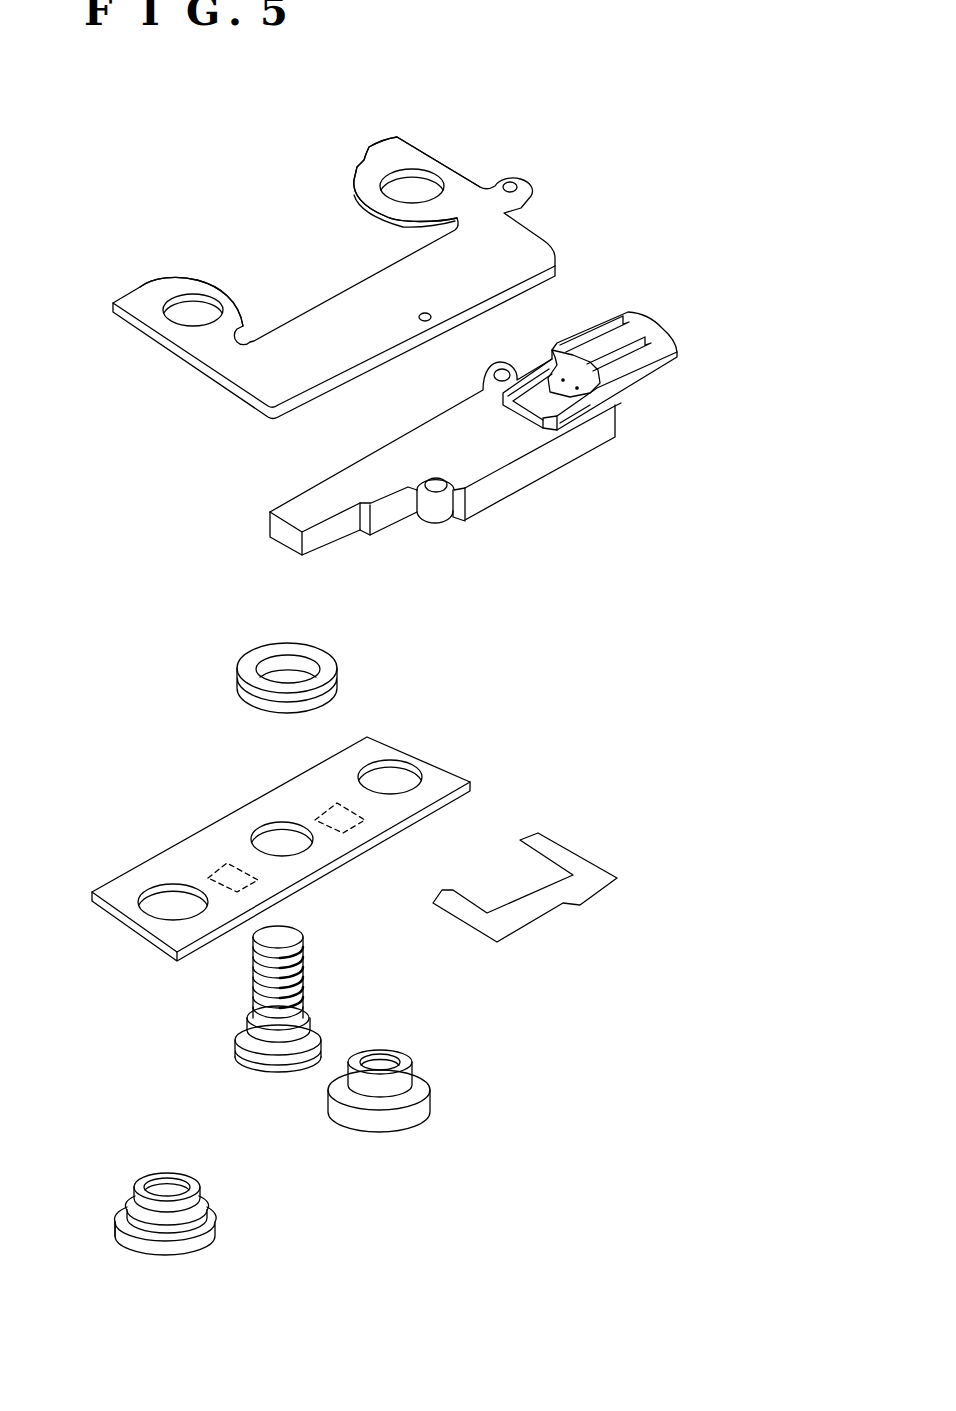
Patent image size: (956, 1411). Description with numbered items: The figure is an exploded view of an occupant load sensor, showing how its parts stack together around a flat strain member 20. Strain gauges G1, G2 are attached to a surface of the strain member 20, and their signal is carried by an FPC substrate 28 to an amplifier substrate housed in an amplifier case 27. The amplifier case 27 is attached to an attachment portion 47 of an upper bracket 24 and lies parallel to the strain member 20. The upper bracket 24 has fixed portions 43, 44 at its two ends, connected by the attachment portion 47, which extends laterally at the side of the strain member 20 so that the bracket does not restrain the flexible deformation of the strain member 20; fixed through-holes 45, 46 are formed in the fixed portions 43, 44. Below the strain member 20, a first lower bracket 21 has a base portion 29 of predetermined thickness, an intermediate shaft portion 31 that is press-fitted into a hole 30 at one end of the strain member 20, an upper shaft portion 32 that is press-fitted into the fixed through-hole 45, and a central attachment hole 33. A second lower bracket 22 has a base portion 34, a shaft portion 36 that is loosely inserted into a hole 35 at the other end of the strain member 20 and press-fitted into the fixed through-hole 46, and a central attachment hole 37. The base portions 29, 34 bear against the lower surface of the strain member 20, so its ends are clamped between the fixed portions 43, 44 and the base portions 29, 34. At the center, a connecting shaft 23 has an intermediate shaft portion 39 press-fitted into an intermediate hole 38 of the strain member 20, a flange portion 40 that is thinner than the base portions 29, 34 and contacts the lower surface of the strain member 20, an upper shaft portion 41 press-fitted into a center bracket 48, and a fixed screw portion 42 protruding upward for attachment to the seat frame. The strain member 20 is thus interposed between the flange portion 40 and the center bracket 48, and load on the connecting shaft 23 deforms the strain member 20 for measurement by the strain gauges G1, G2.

The strain member 20 is at (457, 783).
The first lower bracket 21 is at (160, 1215).
The second lower bracket 22 is at (411, 1083).
The connecting shaft 23 is at (232, 1030).
The upper bracket 24 is at (526, 247).
The amplifier case 27 is at (483, 408).
The FPC substrate 28 is at (578, 858).
The base portion 29 is at (123, 1234).
The hole 30 is at (168, 892).
The intermediate shaft portion 31 is at (190, 1213).
The upper shaft portion 32 is at (153, 1210).
The attachment hole 33 is at (158, 1180).
The base portion 34 is at (377, 1122).
The hole 35 is at (397, 773).
The shaft portion 36 is at (404, 1082).
The attachment hole 37 is at (378, 1056).
The intermediate hole 38 is at (295, 848).
The intermediate shaft portion 39 is at (263, 1052).
The flange portion 40 is at (283, 1072).
The upper shaft portion 41 is at (246, 1020).
The fixed screw portion 42 is at (258, 977).
The fixed portion 43 is at (150, 297).
The fixed portion 44 is at (399, 148).
The fixed through-hole 45 is at (190, 304).
The fixed through-hole 46 is at (415, 186).
The attachment portion 47 is at (522, 280).
The center bracket 48 is at (260, 657).
The strain gauge G1 is at (217, 867).
The strain gauge G2 is at (313, 812).